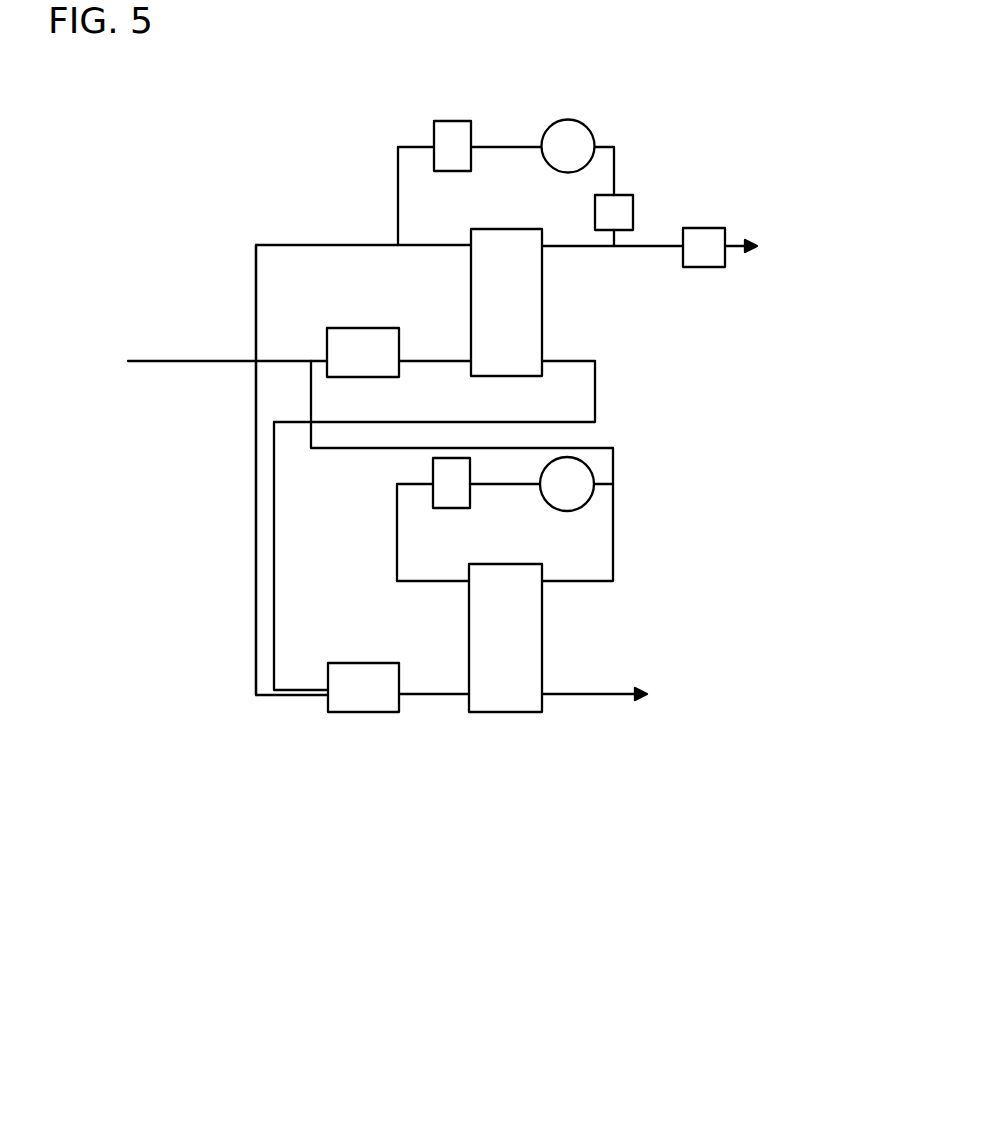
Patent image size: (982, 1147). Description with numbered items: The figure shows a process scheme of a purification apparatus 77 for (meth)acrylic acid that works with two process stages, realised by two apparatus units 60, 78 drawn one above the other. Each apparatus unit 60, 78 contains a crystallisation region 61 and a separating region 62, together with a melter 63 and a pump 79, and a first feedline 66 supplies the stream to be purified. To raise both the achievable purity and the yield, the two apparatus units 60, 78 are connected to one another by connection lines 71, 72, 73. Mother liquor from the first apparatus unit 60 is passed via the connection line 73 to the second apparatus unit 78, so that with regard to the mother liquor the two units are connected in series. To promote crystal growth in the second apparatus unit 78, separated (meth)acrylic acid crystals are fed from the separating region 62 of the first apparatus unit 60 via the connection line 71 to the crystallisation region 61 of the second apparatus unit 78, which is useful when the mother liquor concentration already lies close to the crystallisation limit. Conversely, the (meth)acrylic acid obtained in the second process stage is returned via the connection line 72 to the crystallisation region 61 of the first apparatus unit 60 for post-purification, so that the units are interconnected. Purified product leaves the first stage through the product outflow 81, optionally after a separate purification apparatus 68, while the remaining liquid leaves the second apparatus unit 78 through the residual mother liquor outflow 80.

The apparatus unit 60 is at (828, 391).
The crystallisation region 61 is at (338, 347).
The separating region 62 is at (525, 280).
The melter 63 is at (453, 128).
The first feedline 66 is at (440, 362).
The separate purification apparatus 68 is at (625, 207).
The connection line 71 is at (256, 600).
The connection line 72 is at (615, 462).
The connection line 73 is at (597, 392).
The purification apparatus 77 is at (128, 875).
The apparatus unit 78 is at (823, 426).
The pump 79 is at (577, 142).
The residual mother liquor outflow 80 is at (600, 696).
The product outflow 81 is at (662, 243).